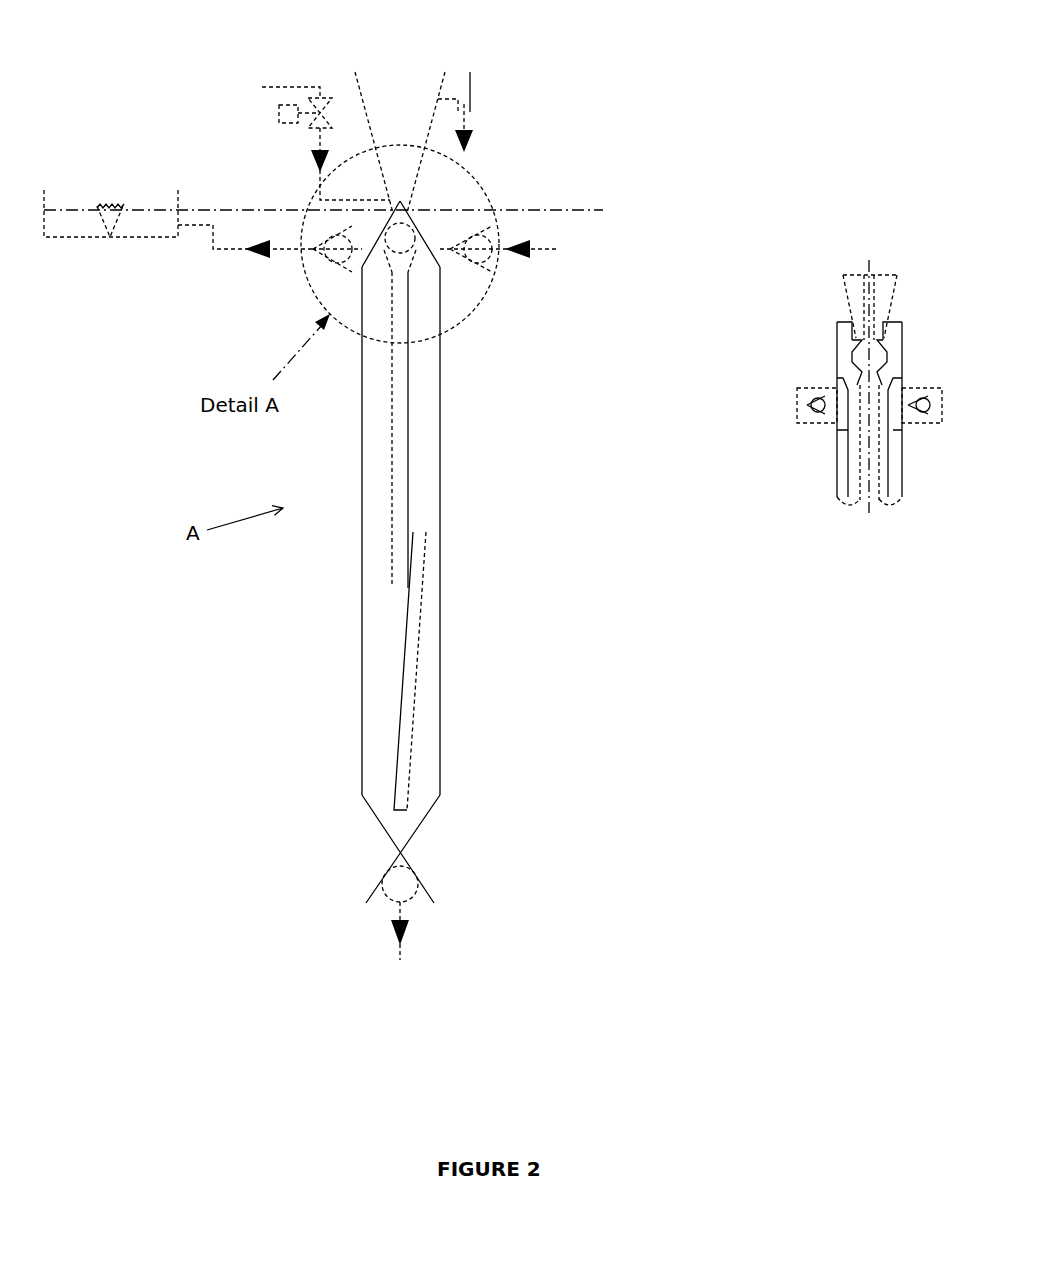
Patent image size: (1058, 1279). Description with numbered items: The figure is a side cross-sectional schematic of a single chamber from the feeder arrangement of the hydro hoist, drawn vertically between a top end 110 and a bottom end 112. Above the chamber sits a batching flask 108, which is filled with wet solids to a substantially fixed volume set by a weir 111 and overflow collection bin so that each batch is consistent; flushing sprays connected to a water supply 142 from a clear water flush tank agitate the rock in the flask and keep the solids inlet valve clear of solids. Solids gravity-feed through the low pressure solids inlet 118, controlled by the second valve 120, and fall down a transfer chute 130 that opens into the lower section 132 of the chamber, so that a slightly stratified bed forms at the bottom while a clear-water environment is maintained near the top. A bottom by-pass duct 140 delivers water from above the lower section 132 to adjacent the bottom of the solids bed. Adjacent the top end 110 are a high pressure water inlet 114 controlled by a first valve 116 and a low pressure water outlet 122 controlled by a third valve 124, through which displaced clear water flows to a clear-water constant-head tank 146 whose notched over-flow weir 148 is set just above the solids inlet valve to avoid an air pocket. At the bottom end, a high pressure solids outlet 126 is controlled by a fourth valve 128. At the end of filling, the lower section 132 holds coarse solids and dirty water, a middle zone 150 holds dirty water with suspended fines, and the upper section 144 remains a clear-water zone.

The batching flask 108 is at (363, 107).
The top end 110 is at (371, 274).
The weir 111 is at (483, 74).
The bottom end 112 is at (368, 817).
The high pressure water inlet 114 is at (542, 250).
The first valve 116 is at (479, 249).
The low pressure solids inlet 118 is at (415, 225).
The second valve 120 is at (398, 242).
The low pressure water outlet 122 is at (287, 250).
The third valve 124 is at (336, 247).
The high pressure solids outlet 126 is at (402, 948).
The fourth valve 128 is at (400, 880).
The transfer chute 130 is at (390, 402).
The lower section 132 is at (432, 721).
The bottom by-pass duct 140 is at (402, 684).
The water supply 142 is at (290, 87).
The upper section 144 is at (429, 391).
The clear-water constant-head tank 146 is at (77, 193).
The notched over-flow weir 148 is at (123, 194).
The middle zone 150 is at (614, 520).